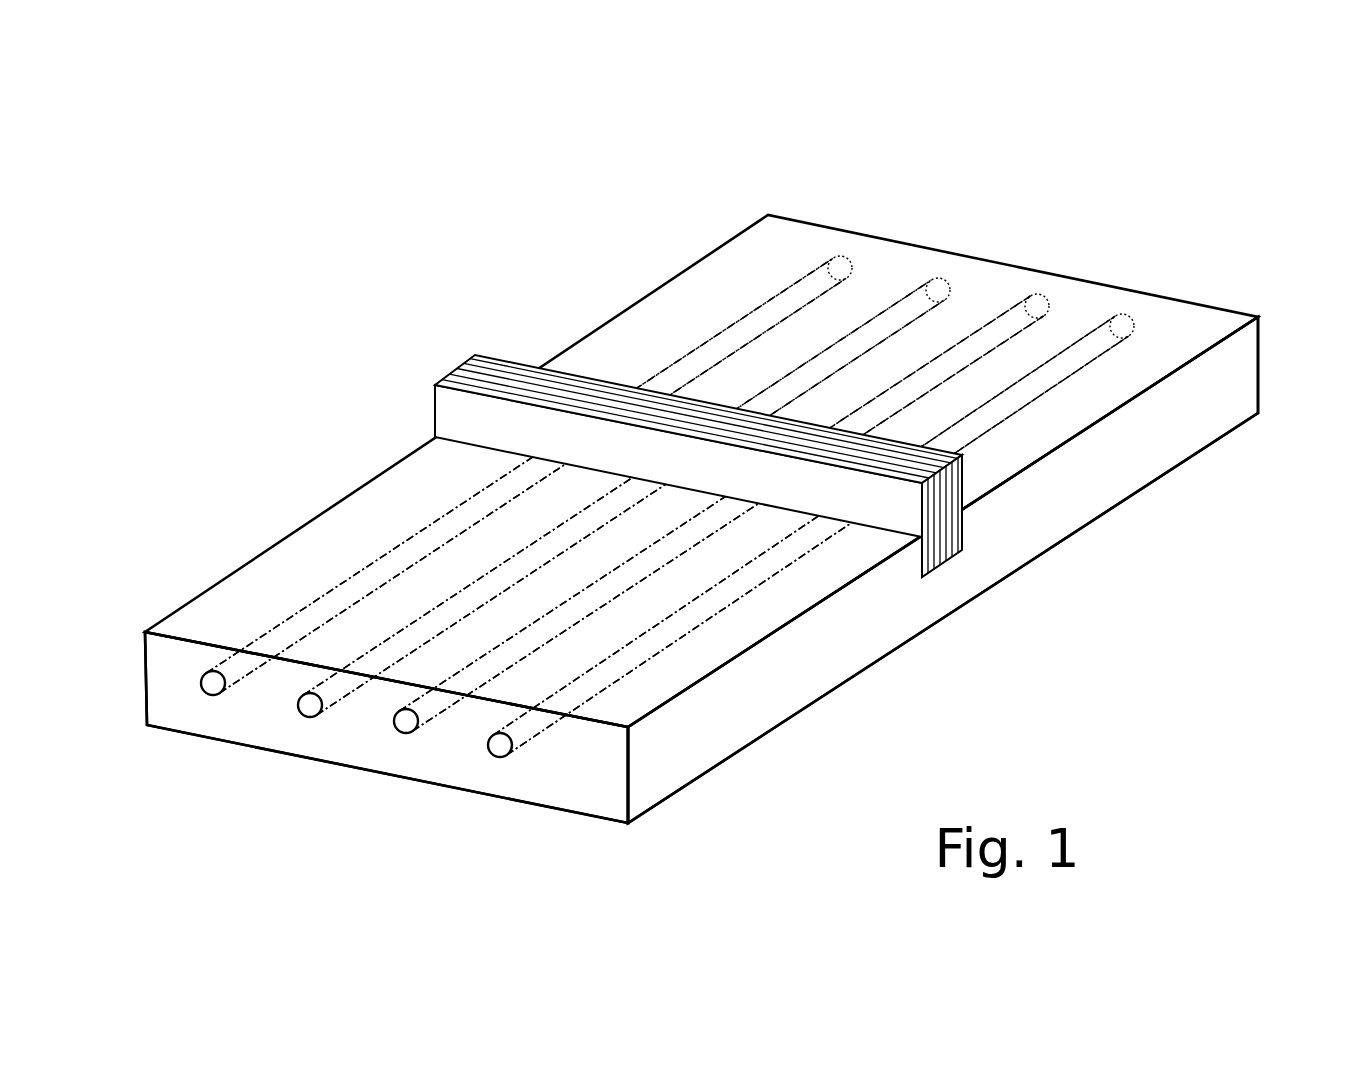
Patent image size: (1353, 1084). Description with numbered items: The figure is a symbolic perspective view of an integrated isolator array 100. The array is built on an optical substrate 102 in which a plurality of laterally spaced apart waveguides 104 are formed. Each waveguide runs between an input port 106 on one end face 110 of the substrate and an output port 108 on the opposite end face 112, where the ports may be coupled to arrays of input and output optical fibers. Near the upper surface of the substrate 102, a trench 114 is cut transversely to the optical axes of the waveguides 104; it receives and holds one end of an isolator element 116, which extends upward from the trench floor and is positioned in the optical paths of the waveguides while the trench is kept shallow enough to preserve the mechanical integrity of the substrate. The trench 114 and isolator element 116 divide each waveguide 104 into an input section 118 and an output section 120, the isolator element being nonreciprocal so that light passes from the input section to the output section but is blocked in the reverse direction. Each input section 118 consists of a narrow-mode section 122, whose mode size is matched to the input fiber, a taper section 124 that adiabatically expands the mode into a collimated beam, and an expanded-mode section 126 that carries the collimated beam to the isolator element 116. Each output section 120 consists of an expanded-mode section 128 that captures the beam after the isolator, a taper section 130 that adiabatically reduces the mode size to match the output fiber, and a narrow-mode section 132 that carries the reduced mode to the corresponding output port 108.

The integrated isolator array 100 is at (1122, 708).
The optical substrate 102 is at (707, 728).
The waveguides 104 is at (885, 322).
The input ports 106 is at (225, 690).
The output ports 108 is at (1123, 327).
The end face 110 is at (342, 738).
The end face 112 is at (1262, 365).
The trench 114 is at (947, 558).
The isolator element 116 is at (458, 414).
The input section 118 is at (308, 620).
The output section 120 is at (683, 353).
The narrow-mode section 122 is at (268, 640).
The taper section 124 is at (415, 548).
The expanded-mode section 126 is at (478, 520).
The expanded-mode section 128 is at (653, 375).
The taper section 130 is at (718, 340).
The narrow-mode section 132 is at (800, 298).